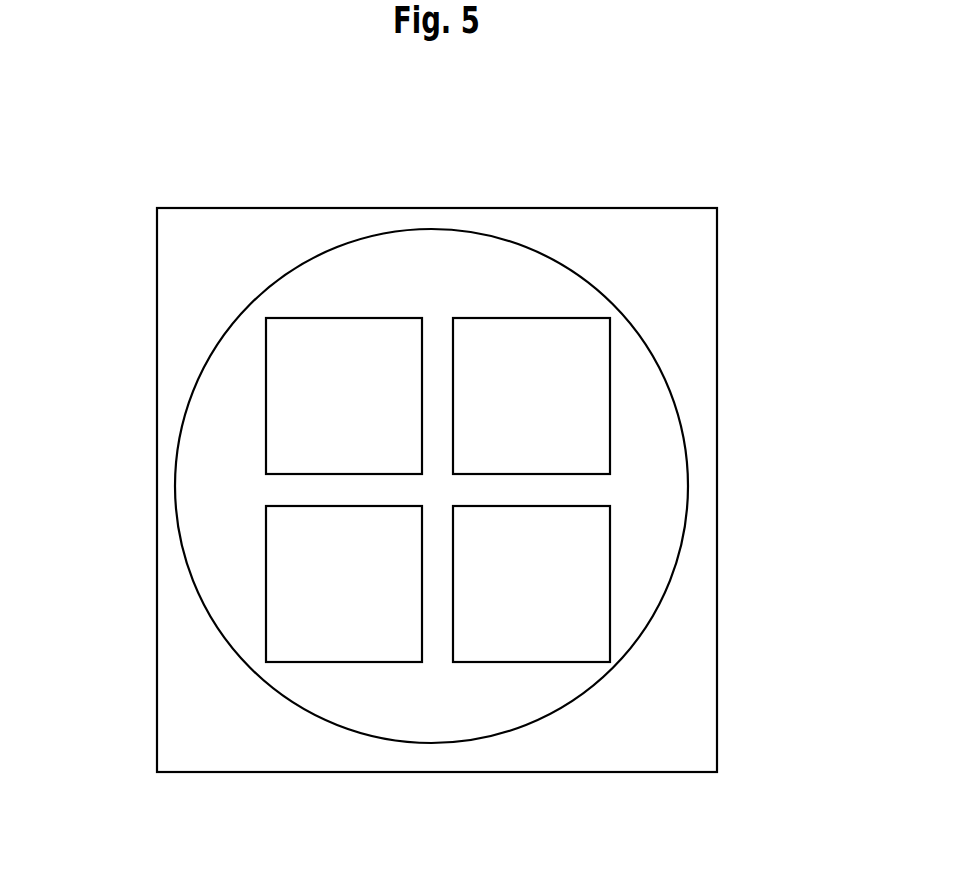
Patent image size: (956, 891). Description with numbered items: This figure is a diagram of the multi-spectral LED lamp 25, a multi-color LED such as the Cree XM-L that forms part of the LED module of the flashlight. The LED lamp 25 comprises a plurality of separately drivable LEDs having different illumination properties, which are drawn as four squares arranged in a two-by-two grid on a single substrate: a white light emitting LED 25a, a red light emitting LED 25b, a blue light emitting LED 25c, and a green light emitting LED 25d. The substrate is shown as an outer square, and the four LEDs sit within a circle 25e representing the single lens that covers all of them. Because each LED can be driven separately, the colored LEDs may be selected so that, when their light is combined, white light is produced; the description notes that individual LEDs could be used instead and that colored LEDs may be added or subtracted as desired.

The multi-spectral LED lamp 25 is at (623, 208).
The white light emitting LED 25a is at (610, 377).
The red light emitting LED 25b is at (610, 552).
The blue light emitting LED 25c is at (266, 562).
The green light emitting LED 25d is at (266, 375).
The circular lens / encapsulant region 25e is at (310, 258).